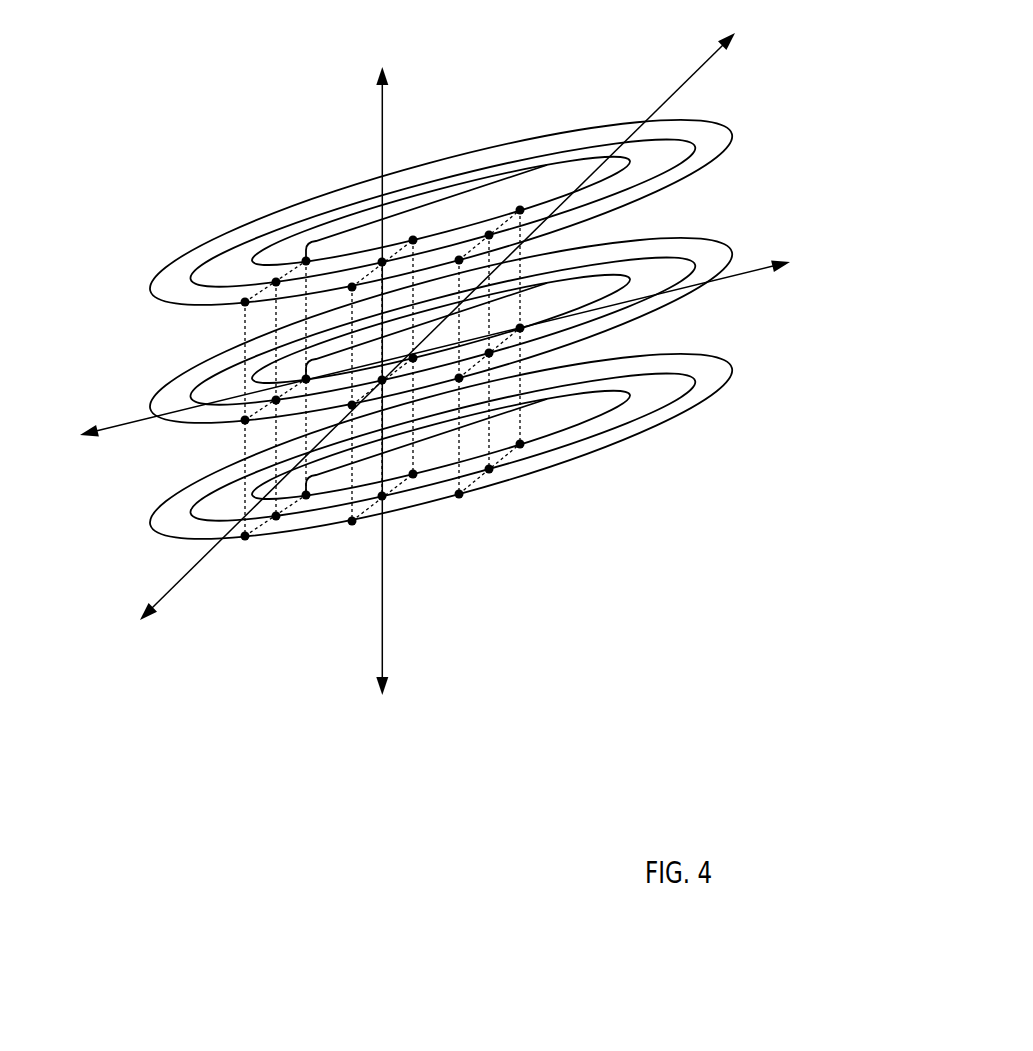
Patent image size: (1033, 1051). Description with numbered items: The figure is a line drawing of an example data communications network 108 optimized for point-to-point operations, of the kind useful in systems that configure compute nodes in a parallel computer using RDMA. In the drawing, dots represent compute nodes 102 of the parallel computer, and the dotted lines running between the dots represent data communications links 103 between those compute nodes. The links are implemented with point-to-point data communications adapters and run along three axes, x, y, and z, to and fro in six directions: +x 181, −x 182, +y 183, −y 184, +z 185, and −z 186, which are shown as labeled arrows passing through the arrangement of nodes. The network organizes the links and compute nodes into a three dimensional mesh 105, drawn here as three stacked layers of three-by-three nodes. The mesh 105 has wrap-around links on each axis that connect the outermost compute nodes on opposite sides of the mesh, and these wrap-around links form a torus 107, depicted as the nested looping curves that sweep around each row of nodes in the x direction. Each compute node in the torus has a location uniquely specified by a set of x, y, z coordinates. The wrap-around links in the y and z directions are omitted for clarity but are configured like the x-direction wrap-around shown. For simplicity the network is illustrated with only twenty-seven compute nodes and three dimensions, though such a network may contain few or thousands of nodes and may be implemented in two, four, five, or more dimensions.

The compute nodes 102 is at (520, 444).
The data communications links 103 is at (245, 446).
The three dimensional mesh 105 is at (518, 206).
The torus 107 is at (228, 214).
The data communications network optimized for point-to-point operations 108 is at (429, 495).
The +x direction 181 is at (829, 290).
The −x direction 182 is at (78, 472).
The +y direction 183 is at (775, 58).
The −y direction 184 is at (137, 668).
The +z direction 185 is at (398, 58).
The −z direction 186 is at (399, 750).